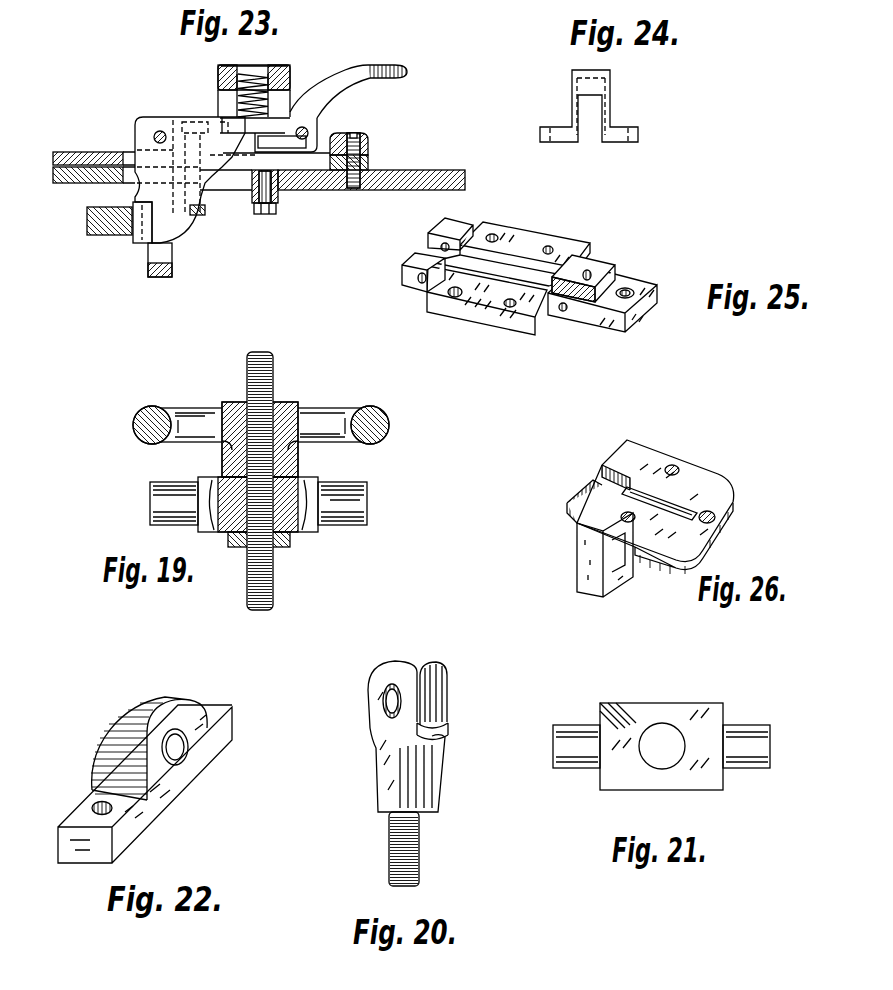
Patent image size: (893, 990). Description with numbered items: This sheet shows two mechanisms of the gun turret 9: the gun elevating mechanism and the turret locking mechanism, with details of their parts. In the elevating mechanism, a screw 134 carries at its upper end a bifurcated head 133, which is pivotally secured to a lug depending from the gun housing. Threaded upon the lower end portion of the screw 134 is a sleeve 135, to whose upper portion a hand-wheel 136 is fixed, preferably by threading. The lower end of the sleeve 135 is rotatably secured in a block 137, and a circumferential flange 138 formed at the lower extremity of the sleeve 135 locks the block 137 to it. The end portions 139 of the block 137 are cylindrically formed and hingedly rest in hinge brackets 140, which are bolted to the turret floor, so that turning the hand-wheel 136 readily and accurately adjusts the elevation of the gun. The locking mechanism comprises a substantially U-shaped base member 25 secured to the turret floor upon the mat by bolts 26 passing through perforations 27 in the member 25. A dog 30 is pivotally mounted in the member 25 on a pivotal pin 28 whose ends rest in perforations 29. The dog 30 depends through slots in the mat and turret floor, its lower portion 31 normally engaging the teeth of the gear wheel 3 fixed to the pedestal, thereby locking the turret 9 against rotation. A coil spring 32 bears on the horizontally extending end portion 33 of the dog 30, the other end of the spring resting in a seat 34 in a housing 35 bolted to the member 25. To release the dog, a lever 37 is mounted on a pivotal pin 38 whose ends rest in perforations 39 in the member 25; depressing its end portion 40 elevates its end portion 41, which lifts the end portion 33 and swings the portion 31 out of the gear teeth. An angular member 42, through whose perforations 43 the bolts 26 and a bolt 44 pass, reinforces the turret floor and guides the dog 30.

In FIG. 23, the gear wheel 3 is at (102, 227).
In FIG. 23, the turret 9 is at (443, 170).
In FIG. 23, the U-shaped base member 25 is at (370, 147).
In FIG. 25, the U-shaped base member 25 is at (528, 240).
In FIG. 23, the bolts 26 is at (370, 162).
In FIG. 25, the perforations 27 is at (493, 240).
In FIG. 23, the pivotal pin 28 is at (158, 130).
In FIG. 25, the perforations 29 is at (423, 277).
In FIG. 23, the dog 30 is at (173, 217).
In FIG. 23, the lower portion of dog 31 is at (143, 218).
In FIG. 23, the coil spring 32 is at (290, 72).
In FIG. 23, the horizontally extending end portion of dog 33 is at (287, 115).
In FIG. 23, the seat 34 is at (238, 70).
In FIG. 24, the seat 34 is at (593, 90).
In FIG. 23, the housing 35 is at (218, 77).
In FIG. 24, the housing 35 is at (608, 113).
In FIG. 23, the lever 37 is at (362, 78).
In FIG. 23, the pivotal pin 38 is at (308, 130).
In FIG. 25, the perforations 39 is at (588, 275).
In FIG. 23, the end portion of lever 40 is at (407, 72).
In FIG. 23, the end portion of lever 41 is at (270, 145).
In FIG. 23, the angular member 42 is at (165, 248).
In FIG. 26, the angular member 42 is at (608, 510).
In FIG. 26, the perforations 43 is at (678, 470).
In FIG. 23, the bolt 44 is at (263, 212).
In FIG. 20, the bifurcated head 133 is at (443, 710).
In FIG. 19, the screw 134 is at (272, 382).
In FIG. 20, the screw 134 is at (420, 847).
In FIG. 19, the sleeve 135 is at (298, 478).
In FIG. 19, the hand-wheel 136 is at (388, 422).
In FIG. 19, the block 137 is at (310, 518).
In FIG. 21, the block 137 is at (680, 713).
In FIG. 19, the circumferential flange 138 is at (280, 543).
In FIG. 19, the end portions of block 139 is at (163, 502).
In FIG. 21, the end portions of block 139 is at (563, 750).
In FIG. 22, the hinge brackets 140 is at (178, 792).